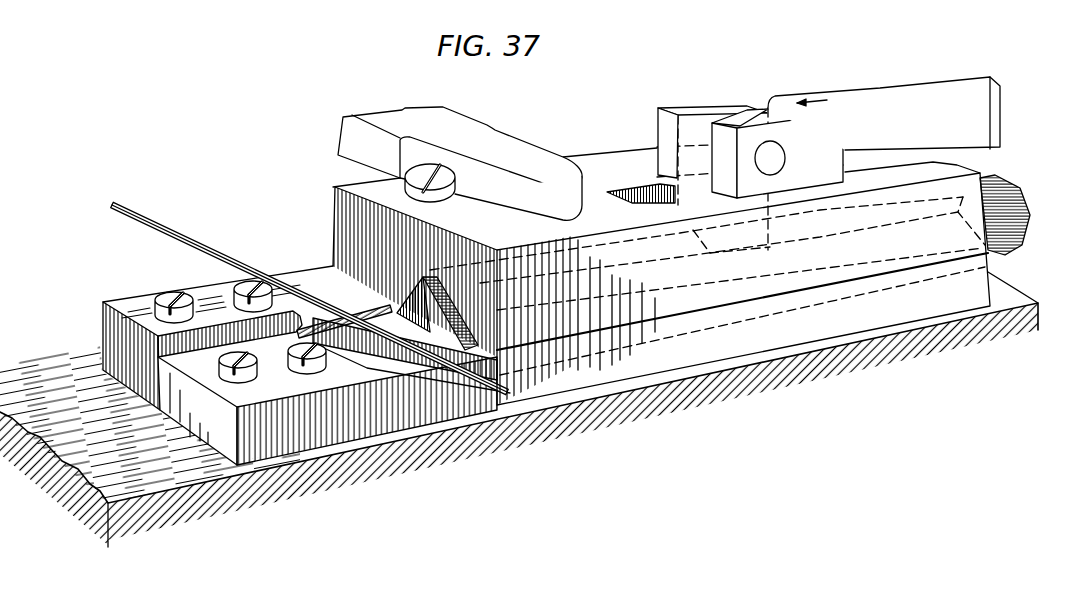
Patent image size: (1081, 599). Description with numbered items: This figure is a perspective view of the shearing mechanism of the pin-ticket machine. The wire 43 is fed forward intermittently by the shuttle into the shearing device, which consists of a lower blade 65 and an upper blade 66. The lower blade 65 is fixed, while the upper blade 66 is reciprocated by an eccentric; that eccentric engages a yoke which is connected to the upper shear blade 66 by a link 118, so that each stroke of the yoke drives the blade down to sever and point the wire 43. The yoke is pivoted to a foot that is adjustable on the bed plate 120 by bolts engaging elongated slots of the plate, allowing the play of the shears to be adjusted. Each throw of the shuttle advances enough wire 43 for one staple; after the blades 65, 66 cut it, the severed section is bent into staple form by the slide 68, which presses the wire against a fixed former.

The bed plate 120 is at (519, 409).
The wire 43 is at (310, 298).
The lower blade 65 is at (344, 339).
The upper blade 66 is at (437, 306).
The slide 68 is at (1005, 215).
The link 118 is at (884, 109).